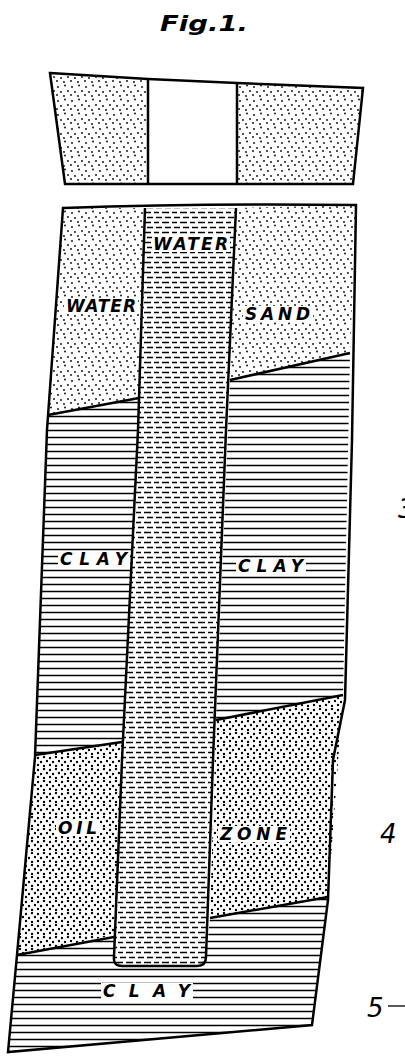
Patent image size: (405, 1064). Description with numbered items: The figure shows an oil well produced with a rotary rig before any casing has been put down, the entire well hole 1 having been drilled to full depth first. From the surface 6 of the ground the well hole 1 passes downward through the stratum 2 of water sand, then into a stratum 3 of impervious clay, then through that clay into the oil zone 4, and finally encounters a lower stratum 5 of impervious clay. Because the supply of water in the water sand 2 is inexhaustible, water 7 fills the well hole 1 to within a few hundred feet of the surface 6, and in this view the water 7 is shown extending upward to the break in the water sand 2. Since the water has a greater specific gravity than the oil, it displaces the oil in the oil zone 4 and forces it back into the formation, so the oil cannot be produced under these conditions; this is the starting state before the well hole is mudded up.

The well hole 1 is at (210, 89).
The stratum of water sand 2 is at (345, 143).
The stratum of impervious clay 3 is at (343, 423).
The oil zone 4 is at (312, 807).
The stratum of impervious clay 5 is at (302, 995).
The surface of the ground 6 is at (298, 82).
The water 7 is at (193, 218).